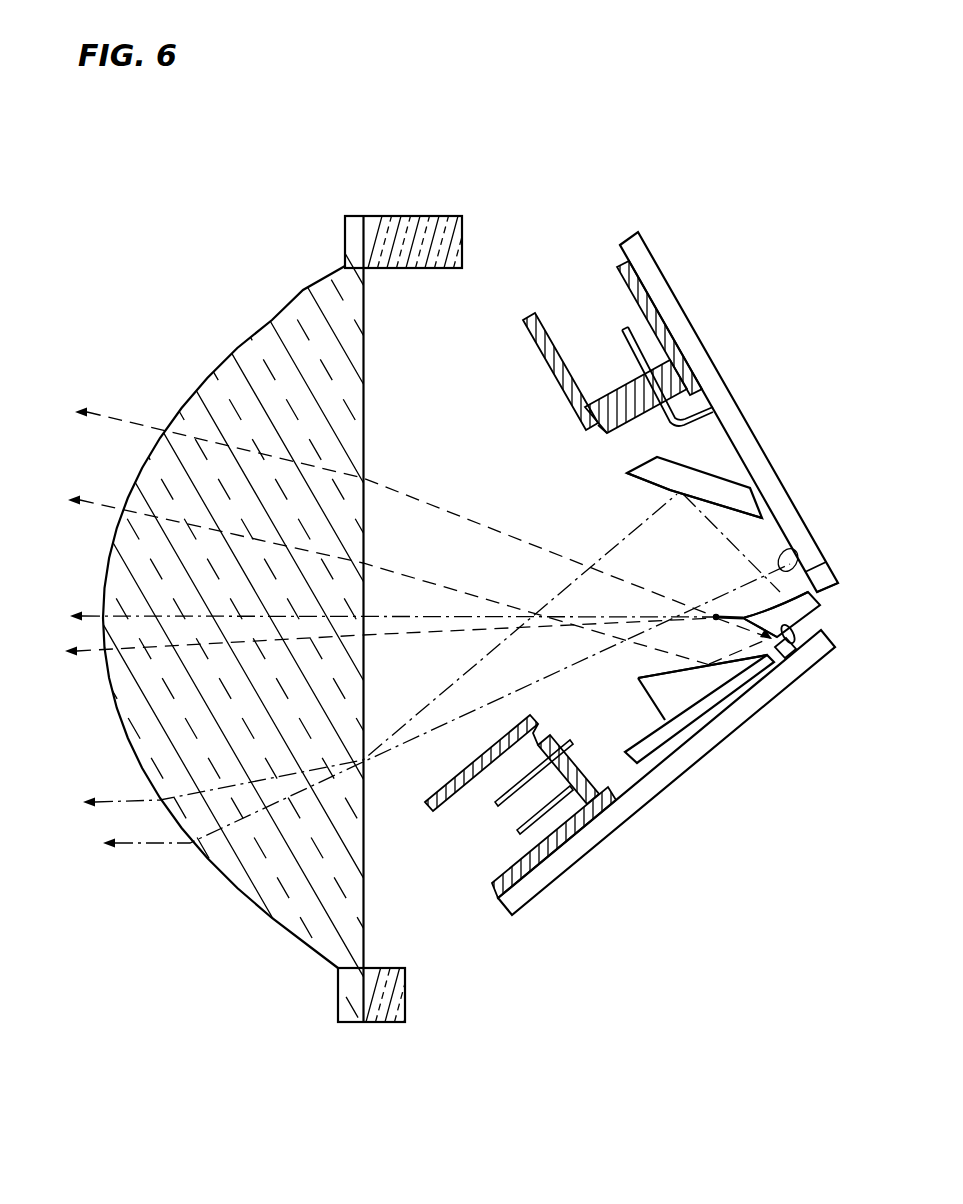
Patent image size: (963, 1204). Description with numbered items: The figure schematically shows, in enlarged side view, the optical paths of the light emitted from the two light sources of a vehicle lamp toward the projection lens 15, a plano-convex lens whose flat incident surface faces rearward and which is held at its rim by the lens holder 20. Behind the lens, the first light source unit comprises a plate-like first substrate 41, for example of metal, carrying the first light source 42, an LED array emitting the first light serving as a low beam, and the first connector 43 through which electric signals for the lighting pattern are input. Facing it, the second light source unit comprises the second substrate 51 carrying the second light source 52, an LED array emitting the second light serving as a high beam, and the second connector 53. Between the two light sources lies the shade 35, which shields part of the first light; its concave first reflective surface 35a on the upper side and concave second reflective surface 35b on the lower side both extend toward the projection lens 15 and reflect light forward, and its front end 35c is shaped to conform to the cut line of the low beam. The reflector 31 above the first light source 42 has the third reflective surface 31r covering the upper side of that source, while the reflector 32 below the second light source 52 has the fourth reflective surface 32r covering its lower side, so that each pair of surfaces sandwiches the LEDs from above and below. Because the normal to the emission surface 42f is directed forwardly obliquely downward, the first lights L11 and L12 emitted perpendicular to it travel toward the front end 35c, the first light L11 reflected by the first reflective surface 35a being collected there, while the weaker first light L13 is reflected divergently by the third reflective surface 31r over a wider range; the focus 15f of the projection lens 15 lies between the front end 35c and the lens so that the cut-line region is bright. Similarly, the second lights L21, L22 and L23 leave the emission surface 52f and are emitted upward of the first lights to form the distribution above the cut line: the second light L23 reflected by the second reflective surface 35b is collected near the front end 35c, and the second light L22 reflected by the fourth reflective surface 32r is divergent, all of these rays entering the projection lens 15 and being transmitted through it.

The projection lens 15 is at (215, 398).
The focus of the projection lens 15f is at (709, 615).
The lens holder 20 is at (422, 240).
The reflector for the first light source 31 is at (645, 467).
The third reflective surface 31r is at (668, 491).
The reflector for the second light source 32 is at (684, 697).
The fourth reflective surface 32r is at (681, 662).
The shade 35 is at (800, 612).
The first reflective surface 35a is at (793, 600).
The second reflective surface 35b is at (779, 640).
The front end of the shade 35c is at (716, 612).
The first substrate 41 is at (752, 440).
The first light source 42 is at (803, 557).
The emission surface of the first light source 42f is at (792, 554).
The first connector 43 is at (535, 322).
The second substrate 51 is at (724, 720).
The second light source 52 is at (789, 645).
The emission surface of the second light source 52f is at (794, 657).
The second connector 53 is at (428, 812).
The first light L11 is at (373, 616).
The first light L12 is at (407, 652).
The first light L13 is at (422, 709).
The second light L21 is at (378, 497).
The second light L22 is at (402, 567).
The second light L23 is at (372, 640).